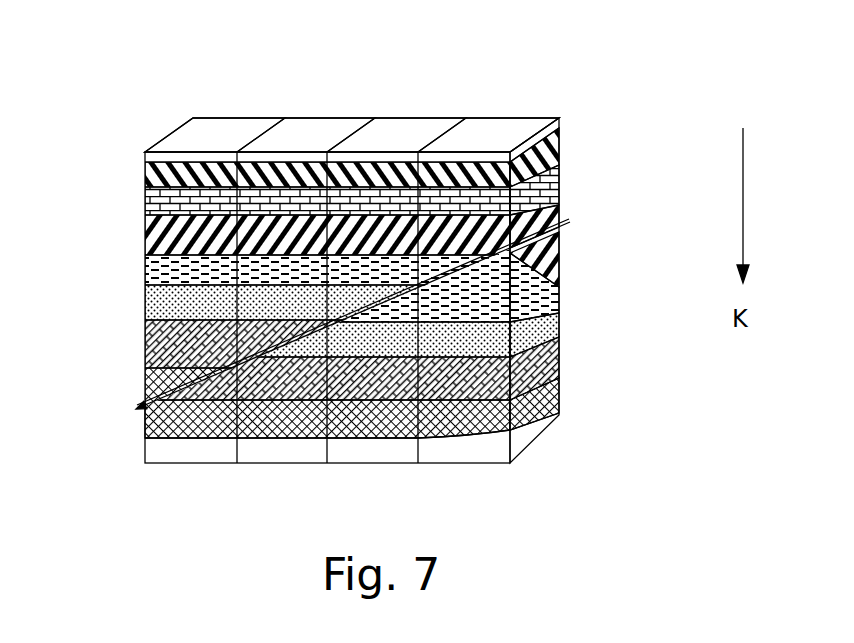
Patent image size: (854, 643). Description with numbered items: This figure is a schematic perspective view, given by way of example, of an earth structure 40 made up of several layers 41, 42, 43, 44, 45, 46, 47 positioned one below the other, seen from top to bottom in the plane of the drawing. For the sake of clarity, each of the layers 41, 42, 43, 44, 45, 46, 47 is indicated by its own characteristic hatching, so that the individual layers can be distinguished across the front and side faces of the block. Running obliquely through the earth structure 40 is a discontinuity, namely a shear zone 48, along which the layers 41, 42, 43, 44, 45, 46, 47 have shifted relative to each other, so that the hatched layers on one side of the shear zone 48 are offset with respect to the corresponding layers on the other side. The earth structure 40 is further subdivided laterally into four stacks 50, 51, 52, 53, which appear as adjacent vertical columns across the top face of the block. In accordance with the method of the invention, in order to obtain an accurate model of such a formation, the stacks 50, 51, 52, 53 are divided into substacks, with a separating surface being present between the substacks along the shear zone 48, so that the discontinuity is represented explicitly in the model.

The earth structure 40 is at (236, 536).
The layer 41 is at (145, 170).
The layer 42 is at (145, 207).
The layer 43 is at (145, 243).
The layer 44 is at (145, 275).
The layer 45 is at (145, 307).
The layer 46 is at (145, 343).
The layer 47 is at (145, 380).
The shear zone 48 is at (136, 409).
The stack 50 is at (217, 130).
The stack 51 is at (316, 130).
The stack 52 is at (413, 130).
The stack 53 is at (509, 130).